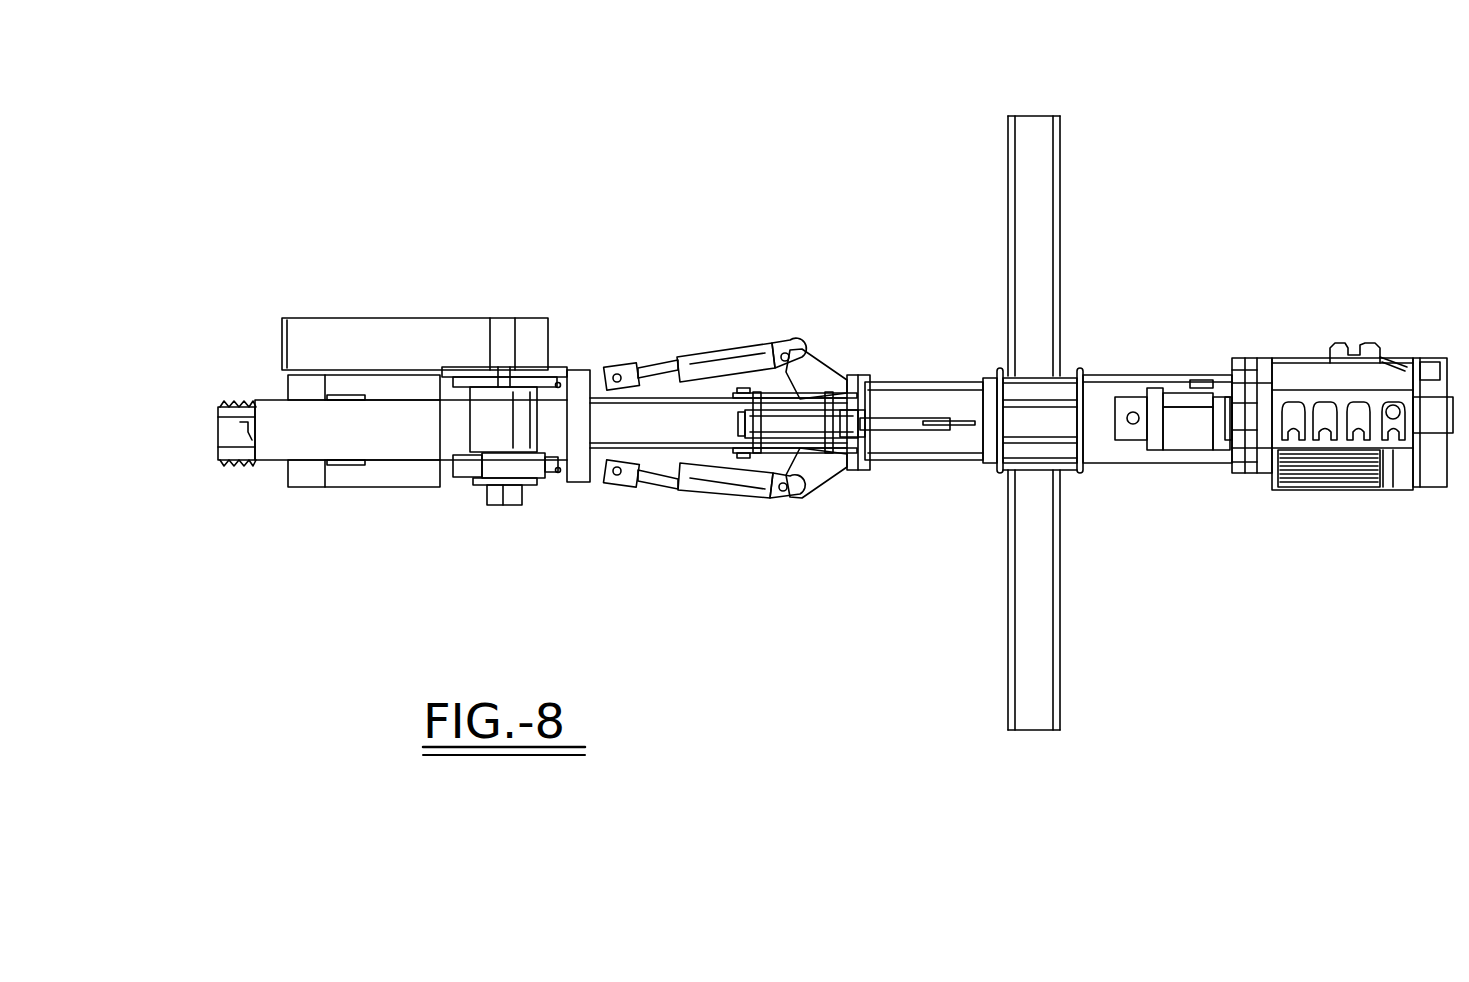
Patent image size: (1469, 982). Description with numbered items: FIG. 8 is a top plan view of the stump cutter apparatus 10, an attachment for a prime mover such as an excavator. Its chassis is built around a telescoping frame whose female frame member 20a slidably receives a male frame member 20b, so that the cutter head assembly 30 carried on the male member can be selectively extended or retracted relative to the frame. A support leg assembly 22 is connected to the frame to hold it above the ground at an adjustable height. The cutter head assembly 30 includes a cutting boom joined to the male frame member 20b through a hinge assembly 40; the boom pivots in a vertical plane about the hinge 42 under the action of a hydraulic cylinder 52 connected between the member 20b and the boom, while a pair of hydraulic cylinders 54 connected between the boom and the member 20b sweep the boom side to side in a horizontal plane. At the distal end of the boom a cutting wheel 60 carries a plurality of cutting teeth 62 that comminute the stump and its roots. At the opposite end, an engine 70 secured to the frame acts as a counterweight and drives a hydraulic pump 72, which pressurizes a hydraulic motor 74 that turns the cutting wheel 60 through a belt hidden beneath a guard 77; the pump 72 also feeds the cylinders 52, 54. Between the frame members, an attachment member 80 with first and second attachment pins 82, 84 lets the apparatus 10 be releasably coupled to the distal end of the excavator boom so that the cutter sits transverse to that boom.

The stump cutter apparatus 10 is at (615, 178).
The female frame member 20a is at (1165, 385).
The male frame member 20b is at (950, 385).
The support leg assembly 22 is at (1070, 148).
The cutter head assembly 30 is at (483, 290).
The hinge assembly 40 is at (844, 350).
The hinge 42 is at (833, 477).
The hydraulic cylinder 52 is at (782, 415).
The hydraulic cylinders 54 is at (698, 353).
The cutting wheel 60 is at (222, 430).
The cutting teeth 62 is at (225, 408).
The engine 70 is at (1353, 490).
The hydraulic pump 72 is at (1202, 467).
The hydraulic motor 74 is at (510, 437).
The guard 77 is at (353, 327).
The attachment member 80 is at (999, 490).
The first attachment pin 82 is at (1063, 467).
The second attachment pin 84 is at (1060, 390).